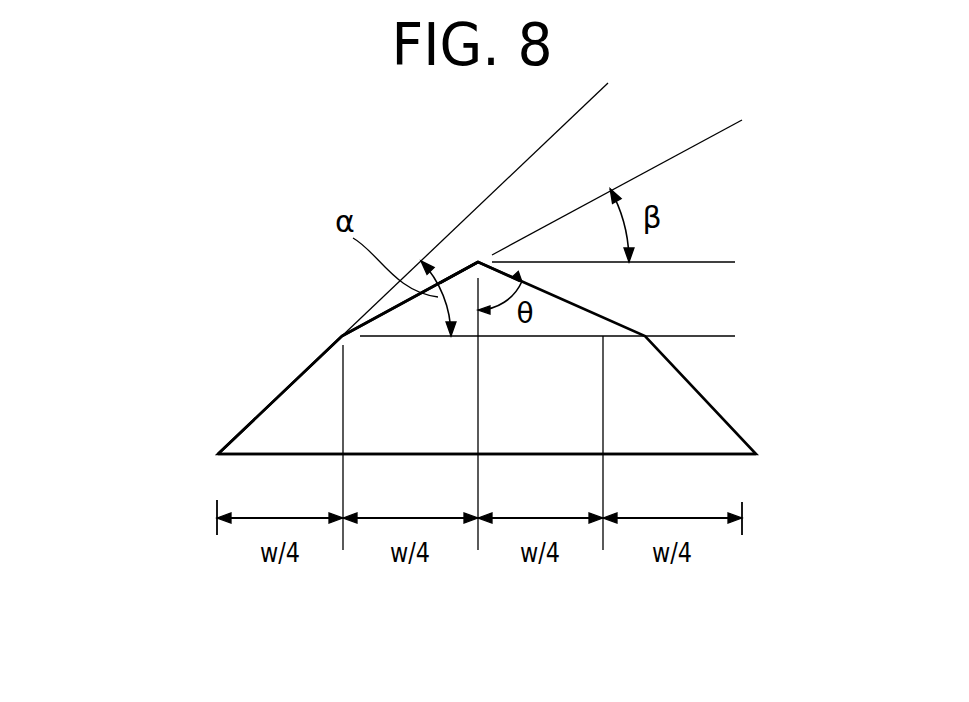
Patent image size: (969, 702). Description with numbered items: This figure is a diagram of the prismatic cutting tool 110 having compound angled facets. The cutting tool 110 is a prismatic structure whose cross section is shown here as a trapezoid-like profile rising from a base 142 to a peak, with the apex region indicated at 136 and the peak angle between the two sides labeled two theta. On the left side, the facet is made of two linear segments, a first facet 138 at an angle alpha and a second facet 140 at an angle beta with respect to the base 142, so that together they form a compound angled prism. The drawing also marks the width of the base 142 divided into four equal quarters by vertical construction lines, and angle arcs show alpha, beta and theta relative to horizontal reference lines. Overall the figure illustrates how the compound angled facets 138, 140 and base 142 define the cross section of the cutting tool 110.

The cutting tool 110 is at (166, 373).
The apex 136 is at (478, 253).
The first facet 138 is at (277, 393).
The second facet 140 is at (382, 312).
The base 142 is at (723, 463).